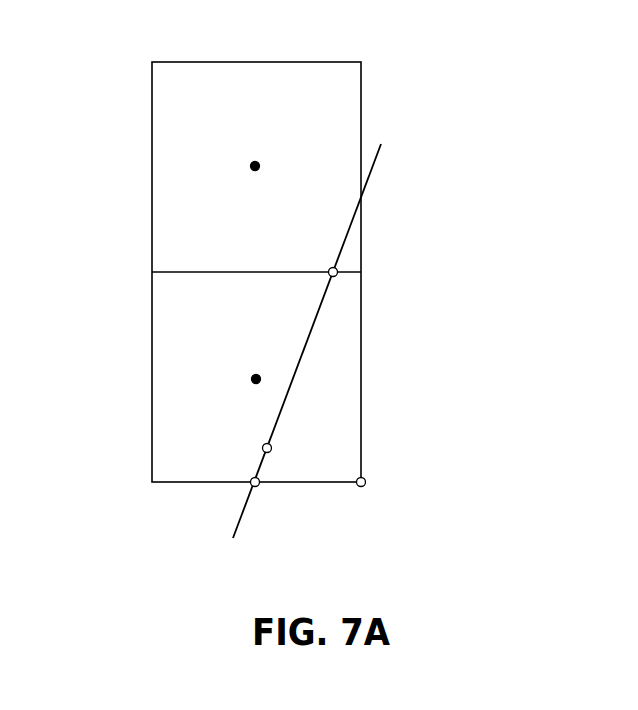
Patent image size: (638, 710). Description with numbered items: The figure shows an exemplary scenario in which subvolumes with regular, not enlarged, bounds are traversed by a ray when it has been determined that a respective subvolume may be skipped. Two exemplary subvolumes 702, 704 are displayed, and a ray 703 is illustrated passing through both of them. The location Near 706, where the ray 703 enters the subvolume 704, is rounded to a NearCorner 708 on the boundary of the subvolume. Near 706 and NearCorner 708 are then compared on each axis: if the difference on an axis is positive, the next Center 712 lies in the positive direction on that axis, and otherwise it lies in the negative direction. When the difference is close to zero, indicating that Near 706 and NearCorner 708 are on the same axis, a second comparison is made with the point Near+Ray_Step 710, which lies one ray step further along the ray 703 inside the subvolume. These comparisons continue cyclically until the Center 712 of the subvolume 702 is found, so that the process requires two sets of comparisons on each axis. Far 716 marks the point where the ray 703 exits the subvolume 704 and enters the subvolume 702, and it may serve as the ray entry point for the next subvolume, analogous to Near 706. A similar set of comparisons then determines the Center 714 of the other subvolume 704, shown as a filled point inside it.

The subvolume 702 is at (150, 170).
The ray 703 is at (232, 527).
The subvolume 704 is at (150, 318).
The Near 706 is at (284, 522).
The NearCorner 708 is at (436, 480).
The Near+Ray_Step 710 is at (276, 446).
The Center 712 is at (249, 380).
The Center 714 is at (262, 164).
The Far 716 is at (341, 280).